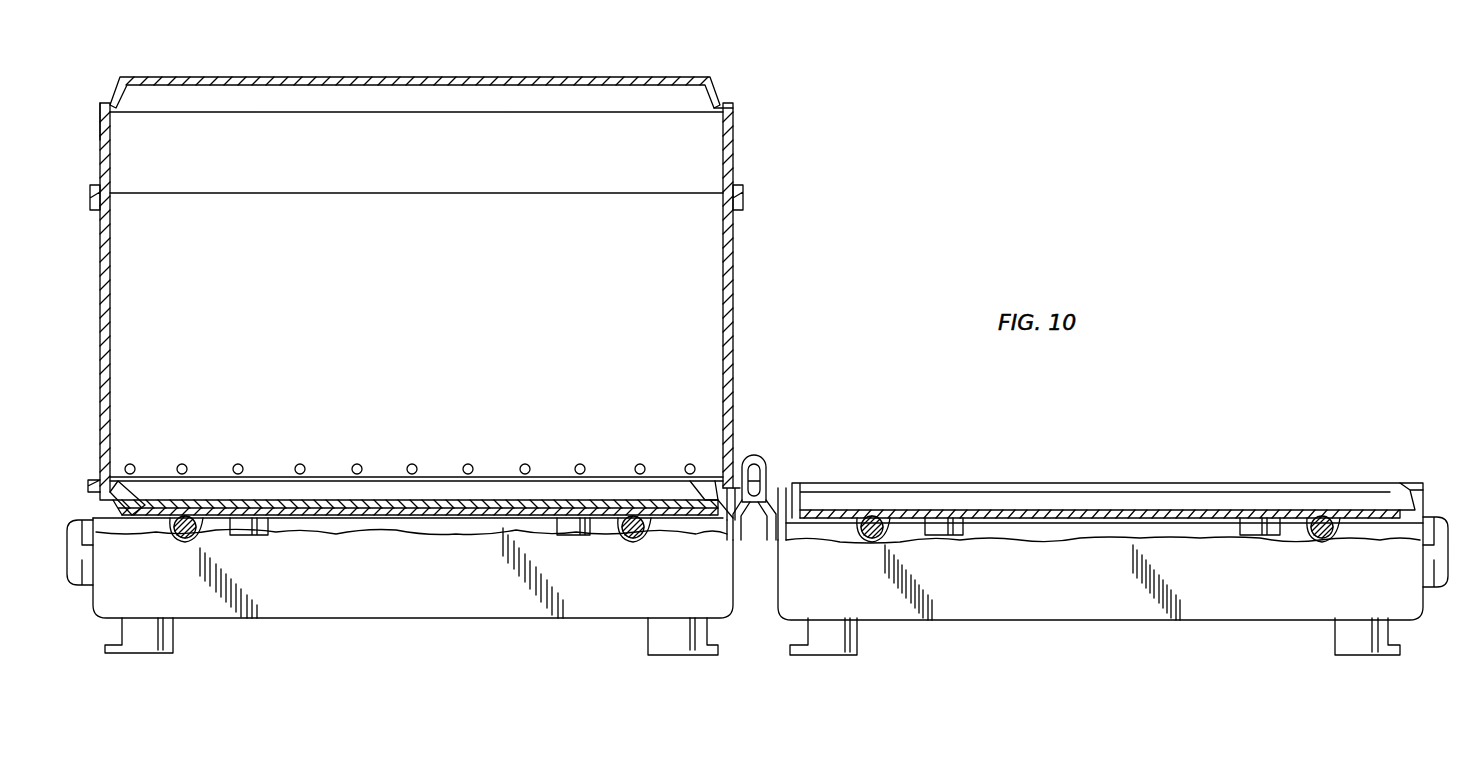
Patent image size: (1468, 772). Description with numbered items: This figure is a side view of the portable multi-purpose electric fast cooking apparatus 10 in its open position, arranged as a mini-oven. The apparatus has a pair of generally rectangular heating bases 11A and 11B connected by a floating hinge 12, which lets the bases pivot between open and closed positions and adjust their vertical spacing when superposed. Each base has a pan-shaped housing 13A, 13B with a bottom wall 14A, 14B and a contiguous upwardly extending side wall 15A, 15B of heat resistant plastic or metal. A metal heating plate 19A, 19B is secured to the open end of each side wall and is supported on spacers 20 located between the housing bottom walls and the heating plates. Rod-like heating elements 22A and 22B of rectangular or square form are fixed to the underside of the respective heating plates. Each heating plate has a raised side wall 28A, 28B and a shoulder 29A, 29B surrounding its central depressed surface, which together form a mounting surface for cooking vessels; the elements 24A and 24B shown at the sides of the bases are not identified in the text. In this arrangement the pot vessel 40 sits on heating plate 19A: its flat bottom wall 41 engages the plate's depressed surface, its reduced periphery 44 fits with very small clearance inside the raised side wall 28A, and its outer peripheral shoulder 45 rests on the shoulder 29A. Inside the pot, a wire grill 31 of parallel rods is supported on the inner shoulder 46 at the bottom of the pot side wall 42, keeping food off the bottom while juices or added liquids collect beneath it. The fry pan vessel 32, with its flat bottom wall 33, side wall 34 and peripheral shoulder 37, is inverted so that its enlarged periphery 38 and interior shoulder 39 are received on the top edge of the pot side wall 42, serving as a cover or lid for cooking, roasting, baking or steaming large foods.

The portable multi-purpose electric fast cooking apparatus 10 is at (878, 437).
The heating base 11A is at (390, 592).
The heating base 11B is at (1113, 557).
The floating hinge 12 is at (753, 456).
The housing 13A is at (330, 612).
The housing 13B is at (960, 610).
The bottom wall 14A is at (510, 620).
The bottom wall 14B is at (1090, 622).
The side wall 15A is at (710, 538).
The side wall 15B is at (792, 530).
The heating plate 19A is at (428, 520).
The heating plate 19B is at (1180, 520).
The spacers 20 is at (240, 540).
The heating element 22A is at (625, 545).
The heating element 22B is at (1322, 542).
The first handle 24A is at (72, 588).
The second handle 24B is at (1433, 590).
The raised side wall 28A is at (148, 480).
The raised side wall 28B is at (800, 497).
The shoulder 29A is at (108, 500).
The shoulder 29B is at (1412, 488).
The wire grill 31 is at (252, 468).
The fry pan vessel 32 is at (443, 268).
The bottom wall 33 is at (366, 87).
The side wall 34 is at (110, 130).
The peripheral shoulder 37 is at (722, 100).
The enlarged periphery 38 is at (744, 208).
The interior shoulder 39 is at (722, 192).
The pot vessel 40 is at (735, 240).
The bottom wall 41 is at (370, 500).
The side wall 42 is at (110, 305).
The reduced periphery 44 is at (700, 482).
The outer peripheral shoulder 45 is at (118, 478).
The inner shoulder 46 is at (715, 470).